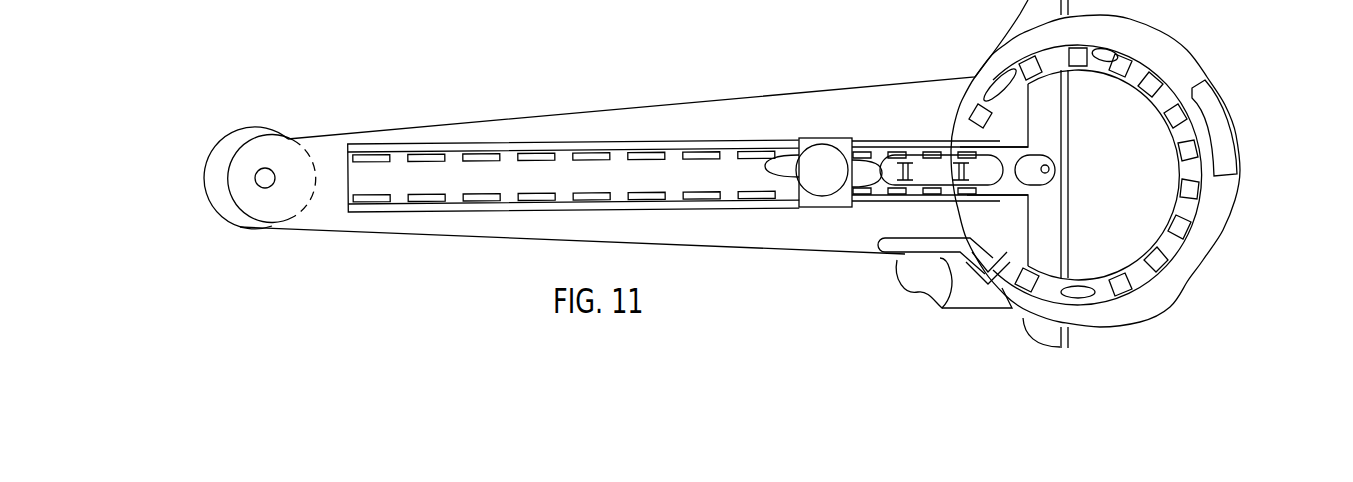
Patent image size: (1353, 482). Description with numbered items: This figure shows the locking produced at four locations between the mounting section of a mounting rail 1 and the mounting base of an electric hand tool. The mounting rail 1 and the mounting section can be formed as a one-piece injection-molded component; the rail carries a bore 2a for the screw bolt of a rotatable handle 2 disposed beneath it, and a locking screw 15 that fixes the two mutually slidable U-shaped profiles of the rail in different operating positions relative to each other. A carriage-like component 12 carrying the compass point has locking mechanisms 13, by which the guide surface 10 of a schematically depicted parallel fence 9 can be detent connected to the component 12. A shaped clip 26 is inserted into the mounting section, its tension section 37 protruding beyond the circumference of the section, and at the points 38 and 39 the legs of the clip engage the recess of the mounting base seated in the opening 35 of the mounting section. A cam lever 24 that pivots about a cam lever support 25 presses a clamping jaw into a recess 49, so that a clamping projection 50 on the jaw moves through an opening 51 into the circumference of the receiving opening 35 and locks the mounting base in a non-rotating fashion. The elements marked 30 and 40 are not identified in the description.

The mounting rail 1 is at (422, 248).
The rotatable handle 2 is at (240, 137).
The bore 2a is at (265, 183).
The parallel fence 9 is at (1077, 187).
The guide surface 10 is at (1068, 152).
The carriage-like component 12 is at (1045, 165).
The locking mechanisms 13 is at (957, 170).
The locking screw 15 is at (822, 155).
The cam lever 24 is at (912, 282).
The cam lever support 25 is at (948, 290).
The shaped clip 26 is at (1252, 152).
The ratchet tooth 30 is at (1168, 248).
The opening 35 is at (1165, 180).
The tension section 37 is at (1243, 102).
The engagement point 38 is at (1102, 60).
The engagement point 39 is at (992, 82).
The spring 40 is at (987, 300).
The recess 49 is at (890, 255).
The clamping projection 50 is at (990, 270).
The opening 51 is at (1025, 262).